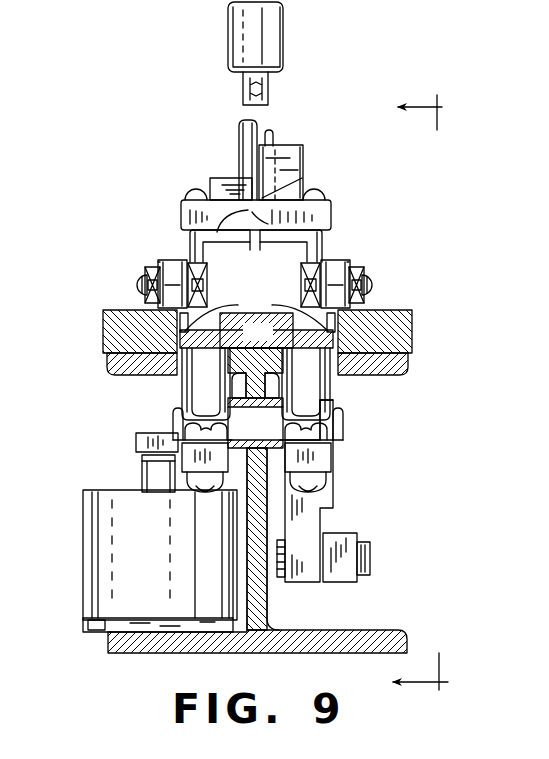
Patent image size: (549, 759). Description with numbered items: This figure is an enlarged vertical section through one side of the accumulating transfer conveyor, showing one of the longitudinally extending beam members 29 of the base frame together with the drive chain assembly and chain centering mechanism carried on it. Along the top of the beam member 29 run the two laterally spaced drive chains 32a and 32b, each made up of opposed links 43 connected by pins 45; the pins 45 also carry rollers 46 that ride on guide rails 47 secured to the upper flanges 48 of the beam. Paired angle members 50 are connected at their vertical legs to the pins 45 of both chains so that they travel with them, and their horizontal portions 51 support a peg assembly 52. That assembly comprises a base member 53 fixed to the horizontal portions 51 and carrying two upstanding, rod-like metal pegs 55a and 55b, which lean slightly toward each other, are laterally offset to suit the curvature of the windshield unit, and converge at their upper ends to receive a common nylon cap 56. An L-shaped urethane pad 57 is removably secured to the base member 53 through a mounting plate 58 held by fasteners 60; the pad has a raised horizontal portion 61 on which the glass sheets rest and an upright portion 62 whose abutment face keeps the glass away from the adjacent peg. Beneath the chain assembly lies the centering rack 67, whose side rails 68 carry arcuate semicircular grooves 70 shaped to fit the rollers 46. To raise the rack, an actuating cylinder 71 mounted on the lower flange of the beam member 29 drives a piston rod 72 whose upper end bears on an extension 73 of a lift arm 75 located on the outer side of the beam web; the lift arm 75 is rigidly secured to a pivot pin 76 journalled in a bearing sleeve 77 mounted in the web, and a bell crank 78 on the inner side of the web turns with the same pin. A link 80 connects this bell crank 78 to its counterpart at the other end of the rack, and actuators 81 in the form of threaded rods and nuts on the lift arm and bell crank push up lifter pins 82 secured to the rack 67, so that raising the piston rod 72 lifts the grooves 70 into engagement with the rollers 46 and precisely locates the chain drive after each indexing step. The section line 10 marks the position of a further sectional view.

The section line 10- 10 is at (430, 392).
The beam member 29 is at (127, 658).
The drive chain 32a is at (347, 262).
The drive chain 32b is at (158, 262).
The links 43 is at (142, 268).
The pins 45 is at (137, 285).
The rollers 46 is at (174, 270).
The guide rails 47 is at (112, 313).
The upper flanges 48 is at (409, 370).
The angle members 50 is at (268, 246).
The horizontal portions 51 is at (242, 216).
The peg assembly 52 is at (224, 77).
The base member 53 is at (192, 197).
The peg 55a is at (271, 132).
The peg 55b is at (246, 131).
The cap 56 is at (284, 28).
The L-shaped pad 57 is at (307, 145).
The mounting plate 58 is at (333, 200).
The fasteners 60 is at (316, 195).
The raised horizontal portion 61 is at (224, 180).
The upright portion 62 is at (286, 156).
The centering rack 67 is at (270, 341).
The side rails 68 is at (256, 307).
The grooves 70 is at (177, 316).
The actuating cylinder 71 is at (96, 540).
The piston rod 72 is at (155, 472).
The extension 73 is at (136, 444).
The lift arm 75 is at (195, 463).
The pivot pin 76 is at (335, 416).
The bearing sleeve 77 is at (278, 426).
The bell crank 78 is at (307, 523).
The link 80 is at (350, 576).
The actuators 81 is at (176, 423).
The lifter pins 82 is at (197, 379).